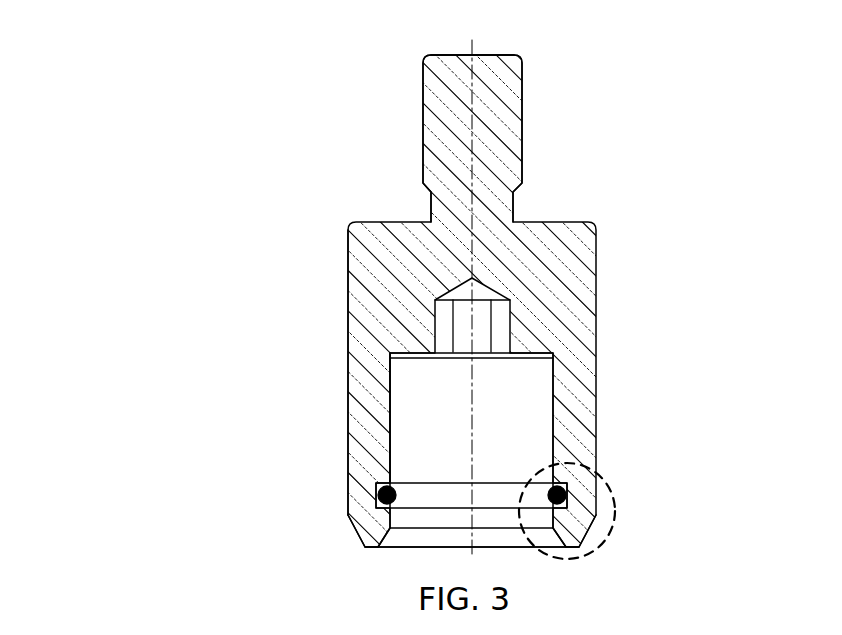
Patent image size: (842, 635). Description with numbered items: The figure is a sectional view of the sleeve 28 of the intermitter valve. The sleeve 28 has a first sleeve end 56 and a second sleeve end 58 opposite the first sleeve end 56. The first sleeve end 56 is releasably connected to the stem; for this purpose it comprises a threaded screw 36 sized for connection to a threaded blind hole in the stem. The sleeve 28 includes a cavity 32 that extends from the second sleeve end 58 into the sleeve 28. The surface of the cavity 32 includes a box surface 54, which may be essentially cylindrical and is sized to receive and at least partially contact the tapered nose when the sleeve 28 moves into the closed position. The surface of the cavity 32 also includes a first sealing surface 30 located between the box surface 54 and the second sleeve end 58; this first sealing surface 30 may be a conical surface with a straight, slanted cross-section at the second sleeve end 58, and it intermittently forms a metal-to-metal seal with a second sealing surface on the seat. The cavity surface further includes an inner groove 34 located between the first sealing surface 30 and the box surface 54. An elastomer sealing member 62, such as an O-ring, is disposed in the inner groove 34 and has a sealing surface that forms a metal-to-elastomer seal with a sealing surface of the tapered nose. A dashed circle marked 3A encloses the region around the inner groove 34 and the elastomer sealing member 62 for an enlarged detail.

The sleeve 28 is at (249, 282).
The first sealing surface 30 is at (385, 535).
The cavity 32 is at (525, 434).
The inner groove 34 is at (503, 496).
The threaded screw 36 is at (528, 126).
The box surface 54 is at (390, 434).
The first sleeve end 56 is at (407, 64).
The second sleeve end 58 is at (320, 558).
The elastomer sealing member 62 is at (557, 495).
The detail view circle 3A is at (617, 498).